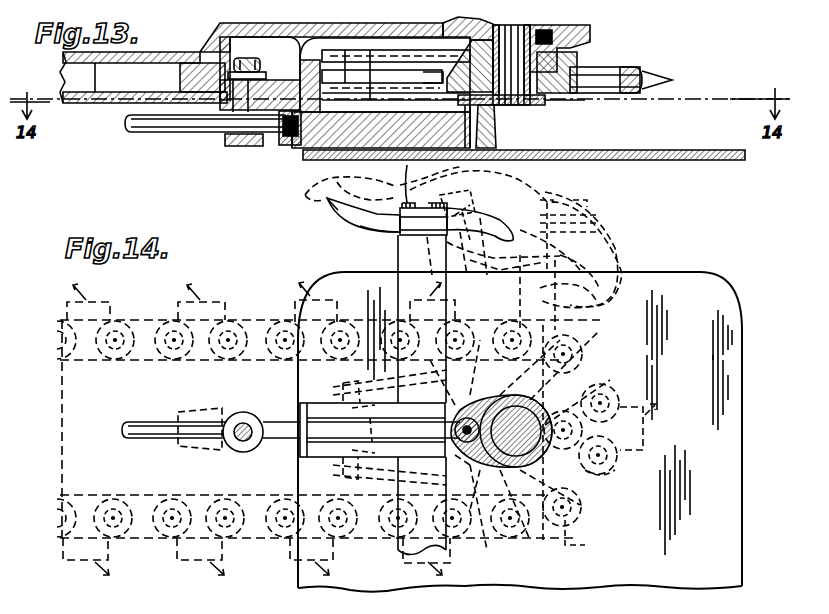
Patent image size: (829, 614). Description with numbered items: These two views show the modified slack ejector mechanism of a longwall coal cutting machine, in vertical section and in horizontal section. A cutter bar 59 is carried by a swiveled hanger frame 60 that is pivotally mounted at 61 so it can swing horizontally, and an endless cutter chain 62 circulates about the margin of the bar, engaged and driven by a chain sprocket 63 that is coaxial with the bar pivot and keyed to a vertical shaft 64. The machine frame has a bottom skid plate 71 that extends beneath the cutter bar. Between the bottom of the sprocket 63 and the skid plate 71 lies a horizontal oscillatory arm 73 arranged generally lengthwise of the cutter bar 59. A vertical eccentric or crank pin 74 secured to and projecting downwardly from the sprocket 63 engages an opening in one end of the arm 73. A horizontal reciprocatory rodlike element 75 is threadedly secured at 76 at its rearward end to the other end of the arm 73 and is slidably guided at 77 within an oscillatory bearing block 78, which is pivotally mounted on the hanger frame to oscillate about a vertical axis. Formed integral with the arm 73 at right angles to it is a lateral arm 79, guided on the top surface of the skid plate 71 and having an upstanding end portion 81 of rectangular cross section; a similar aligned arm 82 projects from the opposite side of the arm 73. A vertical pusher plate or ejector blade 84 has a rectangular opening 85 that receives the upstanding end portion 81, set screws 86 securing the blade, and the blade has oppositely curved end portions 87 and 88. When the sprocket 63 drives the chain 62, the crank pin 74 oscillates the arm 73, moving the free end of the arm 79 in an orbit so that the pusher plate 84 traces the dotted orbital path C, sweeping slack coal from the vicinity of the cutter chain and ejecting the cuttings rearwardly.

In FIG. 13, the cutter bar 59 is at (122, 100).
In FIG. 14, the cutter bar 59 is at (80, 432).
In FIG. 13, the swiveled hanger frame 60 is at (226, 36).
In FIG. 13, the pivot 61 is at (440, 37).
In FIG. 13, the endless cutter chain 62 is at (640, 100).
In FIG. 14, the endless cutter chain 62 is at (570, 532).
In FIG. 13, the chain sprocket 63 is at (562, 92).
In FIG. 14, the chain sprocket 63 is at (600, 472).
In FIG. 13, the vertical shaft 64 is at (560, 58).
In FIG. 14, the vertical shaft 64 is at (522, 425).
In FIG. 13, the bottom skid plate 71 is at (690, 158).
In FIG. 14, the bottom skid plate 71 is at (742, 460).
In FIG. 13, the oscillatory arm 73 is at (315, 150).
In FIG. 14, the oscillatory arm 73 is at (330, 456).
In FIG. 13, the eccentric pin 74 is at (493, 145).
In FIG. 14, the eccentric pin 74 is at (470, 465).
In FIG. 13, the reciprocatory rodlike element 75 is at (190, 126).
In FIG. 14, the reciprocatory rodlike element 75 is at (146, 422).
In FIG. 13, the threaded connection 76 is at (290, 146).
In FIG. 13, the slide guide 77 is at (255, 90).
In FIG. 13, the oscillatory bearing block 78 is at (245, 146).
In FIG. 14, the oscillatory bearing block 78 is at (243, 412).
In FIG. 14, the lateral arm 79 is at (398, 253).
In FIG. 14, the upstanding end portion 81 is at (457, 218).
In FIG. 14, the arm 82 is at (400, 550).
In FIG. 14, the pusher plate 84 is at (338, 221).
In FIG. 14, the rectangular opening 85 is at (388, 232).
In FIG. 14, the set screws 86 is at (392, 183).
In FIG. 14, the curved end portion 87 is at (325, 200).
In FIG. 14, the curved end portion 88 is at (543, 244).
In FIG. 14, the orbital path C is at (623, 263).